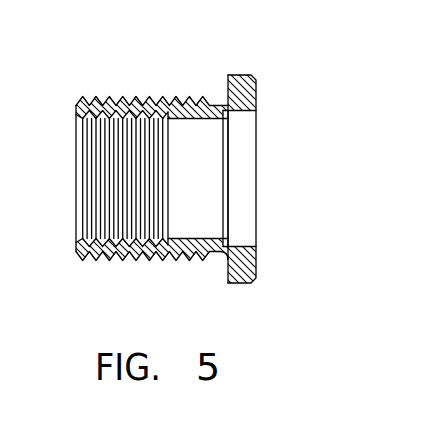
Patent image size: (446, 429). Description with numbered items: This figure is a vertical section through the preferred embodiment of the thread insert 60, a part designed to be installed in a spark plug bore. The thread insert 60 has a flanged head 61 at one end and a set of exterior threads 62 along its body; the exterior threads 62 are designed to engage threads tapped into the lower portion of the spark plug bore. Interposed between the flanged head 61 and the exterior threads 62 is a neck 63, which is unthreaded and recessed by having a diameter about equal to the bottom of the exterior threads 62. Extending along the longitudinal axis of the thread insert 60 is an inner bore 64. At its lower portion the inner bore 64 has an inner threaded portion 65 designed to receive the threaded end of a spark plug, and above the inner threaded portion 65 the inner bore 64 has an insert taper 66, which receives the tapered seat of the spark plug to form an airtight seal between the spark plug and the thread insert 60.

The thread insert 60 is at (123, 268).
The flanged head 61 is at (240, 284).
The exterior threads 62 is at (77, 98).
The neck 63 is at (216, 253).
The inner bore 64 is at (202, 157).
The inner threaded portion 65 is at (101, 206).
The insert taper 66 is at (228, 242).